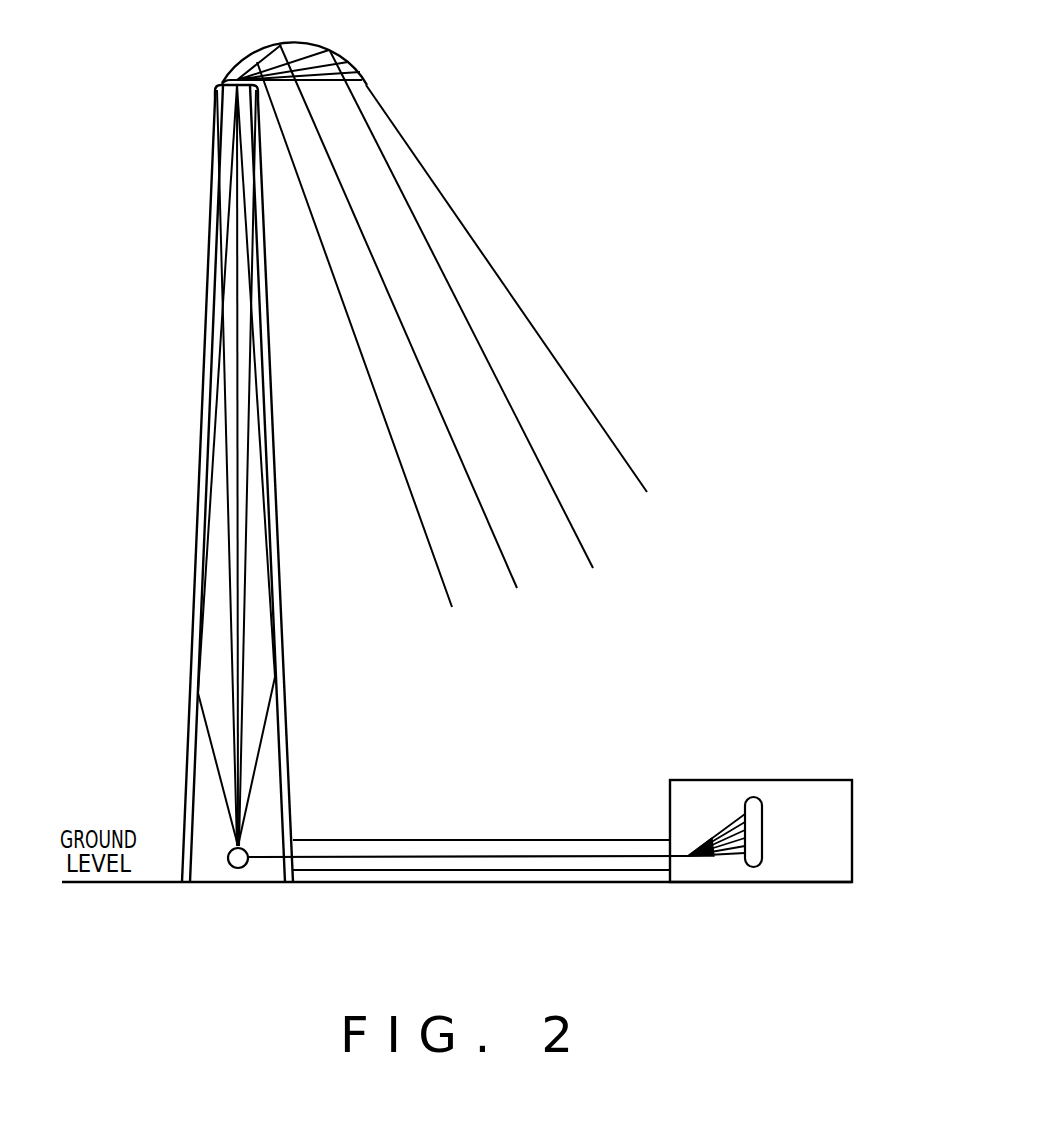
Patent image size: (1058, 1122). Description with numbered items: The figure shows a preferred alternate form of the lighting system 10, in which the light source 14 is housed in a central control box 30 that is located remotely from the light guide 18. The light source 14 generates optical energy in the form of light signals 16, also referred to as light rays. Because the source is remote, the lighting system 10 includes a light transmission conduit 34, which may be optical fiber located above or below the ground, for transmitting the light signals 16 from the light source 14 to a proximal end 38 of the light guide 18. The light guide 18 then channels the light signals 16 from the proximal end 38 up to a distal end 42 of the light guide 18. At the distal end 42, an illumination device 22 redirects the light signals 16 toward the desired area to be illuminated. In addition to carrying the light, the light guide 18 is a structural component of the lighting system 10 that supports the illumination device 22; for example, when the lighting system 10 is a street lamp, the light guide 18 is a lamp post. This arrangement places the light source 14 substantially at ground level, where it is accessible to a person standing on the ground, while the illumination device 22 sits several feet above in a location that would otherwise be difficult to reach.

The lighting system 10 is at (143, 247).
The light source 14 is at (755, 820).
The light signals 16 is at (553, 350).
The light guide 18 is at (199, 453).
The illumination device 22 is at (367, 85).
The central control box 30 is at (832, 819).
The light transmission conduit 34 is at (598, 840).
The proximal end 38 is at (208, 870).
The distal end 42 is at (233, 98).